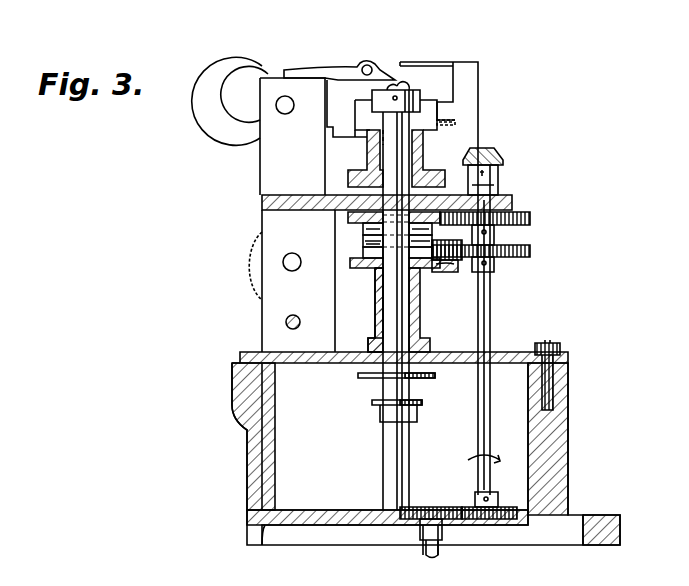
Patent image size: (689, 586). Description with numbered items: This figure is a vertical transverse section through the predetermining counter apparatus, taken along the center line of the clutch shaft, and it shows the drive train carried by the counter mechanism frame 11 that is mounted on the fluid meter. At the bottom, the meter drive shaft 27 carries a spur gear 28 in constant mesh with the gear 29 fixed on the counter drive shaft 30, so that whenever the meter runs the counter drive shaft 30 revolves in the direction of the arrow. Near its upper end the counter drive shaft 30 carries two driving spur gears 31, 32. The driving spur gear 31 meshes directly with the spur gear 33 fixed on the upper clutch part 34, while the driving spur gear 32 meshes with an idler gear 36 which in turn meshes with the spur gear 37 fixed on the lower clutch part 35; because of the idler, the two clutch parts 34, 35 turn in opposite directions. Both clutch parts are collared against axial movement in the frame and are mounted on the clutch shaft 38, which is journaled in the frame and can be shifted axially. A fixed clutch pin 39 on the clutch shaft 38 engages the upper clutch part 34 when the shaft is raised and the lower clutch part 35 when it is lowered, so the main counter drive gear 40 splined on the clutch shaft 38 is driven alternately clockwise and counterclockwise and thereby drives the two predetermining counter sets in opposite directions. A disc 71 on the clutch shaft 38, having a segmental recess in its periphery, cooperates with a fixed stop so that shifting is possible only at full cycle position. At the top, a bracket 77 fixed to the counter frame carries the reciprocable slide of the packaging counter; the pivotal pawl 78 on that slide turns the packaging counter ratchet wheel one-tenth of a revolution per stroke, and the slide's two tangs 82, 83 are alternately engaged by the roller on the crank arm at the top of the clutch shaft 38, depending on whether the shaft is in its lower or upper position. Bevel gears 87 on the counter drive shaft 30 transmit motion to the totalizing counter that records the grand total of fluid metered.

The counter mechanism frame 11 is at (262, 328).
The meter drive shaft 27 is at (440, 553).
The spur gear 28 is at (428, 507).
The gear 29 is at (503, 507).
The counter drive shaft 30 is at (490, 322).
The driving spur gear 31 is at (530, 218).
The driving spur gear 32 is at (530, 250).
The spur gear 33 is at (352, 218).
The upper clutch part 34 is at (366, 236).
The lower clutch part 35 is at (376, 264).
The idler gear 36 is at (455, 270).
The spur gear 37 is at (442, 273).
The clutch shaft 38 is at (395, 302).
The clutch pin 39 is at (372, 249).
The main counter drive gear 40 is at (438, 173).
The disc 71 is at (362, 376).
The bracket 77 is at (455, 62).
The pawl 78 is at (308, 73).
The tang 82 is at (368, 140).
The tang 83 is at (455, 124).
The bevel gears 87 is at (503, 160).